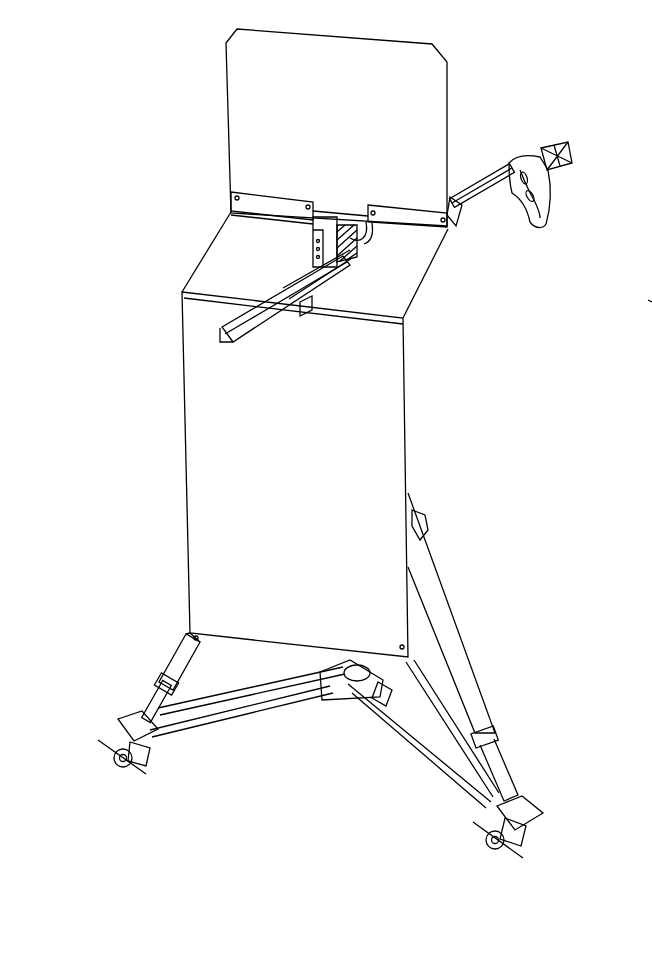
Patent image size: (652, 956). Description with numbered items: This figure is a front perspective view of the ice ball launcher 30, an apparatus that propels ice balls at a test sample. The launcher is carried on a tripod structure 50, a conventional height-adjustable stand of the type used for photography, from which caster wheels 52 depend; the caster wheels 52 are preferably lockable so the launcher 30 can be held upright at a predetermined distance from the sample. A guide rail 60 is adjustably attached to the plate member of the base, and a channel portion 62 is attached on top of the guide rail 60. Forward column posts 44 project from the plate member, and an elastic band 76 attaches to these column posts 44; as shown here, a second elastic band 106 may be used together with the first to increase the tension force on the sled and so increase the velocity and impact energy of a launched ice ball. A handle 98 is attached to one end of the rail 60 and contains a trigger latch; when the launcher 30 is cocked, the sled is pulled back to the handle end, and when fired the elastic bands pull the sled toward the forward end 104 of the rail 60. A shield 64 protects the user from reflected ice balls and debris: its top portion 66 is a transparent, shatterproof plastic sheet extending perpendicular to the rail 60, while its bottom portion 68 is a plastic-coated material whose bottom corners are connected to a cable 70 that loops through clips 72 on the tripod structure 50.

The ice ball launcher 30 is at (489, 88).
The shield 64 is at (224, 98).
The top portion of the shield 66 is at (303, 110).
The channel portion 62 is at (245, 305).
The bottom portion of the shield 68 is at (308, 520).
The guide rail 60 is at (262, 323).
The forward column posts 44 is at (323, 215).
The elastic band 76 is at (348, 224).
The second elastic band 106 is at (362, 234).
The handle 98 is at (546, 192).
The forward end of the rail 104 is at (648, 299).
The tripod structure 50 is at (466, 655).
The caster wheels 52 is at (153, 763).
The clips 72 is at (347, 671).
The cable 70 is at (313, 696).